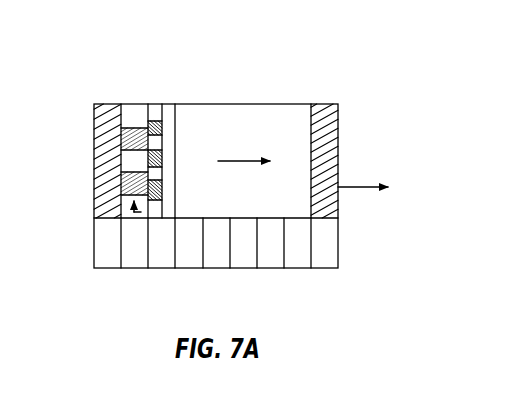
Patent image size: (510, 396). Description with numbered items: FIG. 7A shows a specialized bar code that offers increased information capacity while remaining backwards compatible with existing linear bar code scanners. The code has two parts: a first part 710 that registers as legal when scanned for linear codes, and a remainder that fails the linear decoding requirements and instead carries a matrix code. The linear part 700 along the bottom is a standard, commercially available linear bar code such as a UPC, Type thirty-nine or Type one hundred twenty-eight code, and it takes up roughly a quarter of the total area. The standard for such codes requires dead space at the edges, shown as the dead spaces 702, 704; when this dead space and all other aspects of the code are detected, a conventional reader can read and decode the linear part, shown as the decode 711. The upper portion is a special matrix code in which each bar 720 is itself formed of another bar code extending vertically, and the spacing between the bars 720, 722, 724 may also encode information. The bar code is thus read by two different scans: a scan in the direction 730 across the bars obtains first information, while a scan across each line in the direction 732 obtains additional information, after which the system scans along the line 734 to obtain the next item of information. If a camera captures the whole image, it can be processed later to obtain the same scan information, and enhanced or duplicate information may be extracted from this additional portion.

The linear part 700 is at (93, 243).
The dead space 702 is at (113, 263).
The dead space 704 is at (325, 262).
The first part 710 is at (102, 103).
The decode 711 is at (407, 203).
The bar 720 is at (138, 103).
The bar 722 is at (157, 103).
The bar 724 is at (175, 139).
The scan direction 730 is at (240, 160).
The scan direction 732 is at (141, 212).
The scan line 734 is at (162, 192).